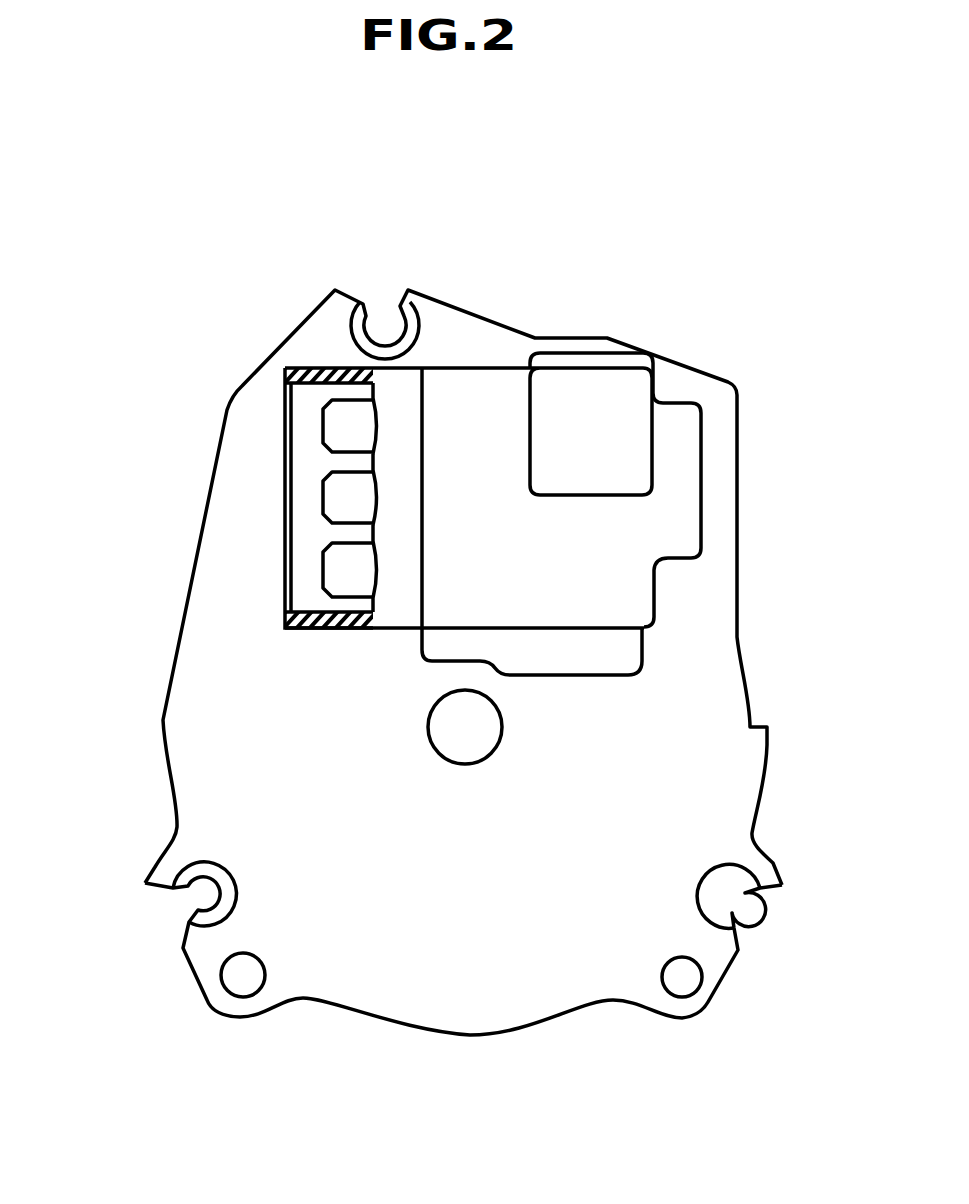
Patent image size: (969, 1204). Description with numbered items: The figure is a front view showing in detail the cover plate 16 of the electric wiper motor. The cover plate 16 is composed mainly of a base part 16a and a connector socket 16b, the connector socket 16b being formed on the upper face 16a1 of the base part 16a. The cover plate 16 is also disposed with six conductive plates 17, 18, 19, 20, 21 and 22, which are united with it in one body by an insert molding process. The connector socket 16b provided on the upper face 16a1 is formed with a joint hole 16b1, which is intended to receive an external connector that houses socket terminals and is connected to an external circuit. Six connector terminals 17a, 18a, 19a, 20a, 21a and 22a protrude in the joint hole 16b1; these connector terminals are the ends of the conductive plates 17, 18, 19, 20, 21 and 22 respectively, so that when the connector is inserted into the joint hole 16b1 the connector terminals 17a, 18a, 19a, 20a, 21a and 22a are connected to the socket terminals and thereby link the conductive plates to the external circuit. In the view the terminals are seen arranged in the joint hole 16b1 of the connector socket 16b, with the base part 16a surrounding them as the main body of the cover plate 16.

The cover plate 16 is at (737, 578).
The base part 16a is at (608, 822).
The upper face 16a1 is at (388, 640).
The connector socket 16b is at (503, 410).
The joint hole 16b1 is at (307, 368).
The conductive plate 17 is at (225, 383).
The conductive plate 18 is at (220, 475).
The conductive plate 19 is at (217, 547).
The conductive plate 20 is at (323, 402).
The conductive plate 21 is at (328, 475).
The conductive plate 22 is at (325, 548).
The connector terminal 17a is at (438, 326).
The connector terminal 18a is at (507, 442).
The connector terminal 19a is at (208, 595).
The connector terminal 20a is at (357, 418).
The connector terminal 21a is at (362, 493).
The connector terminal 22a is at (343, 582).